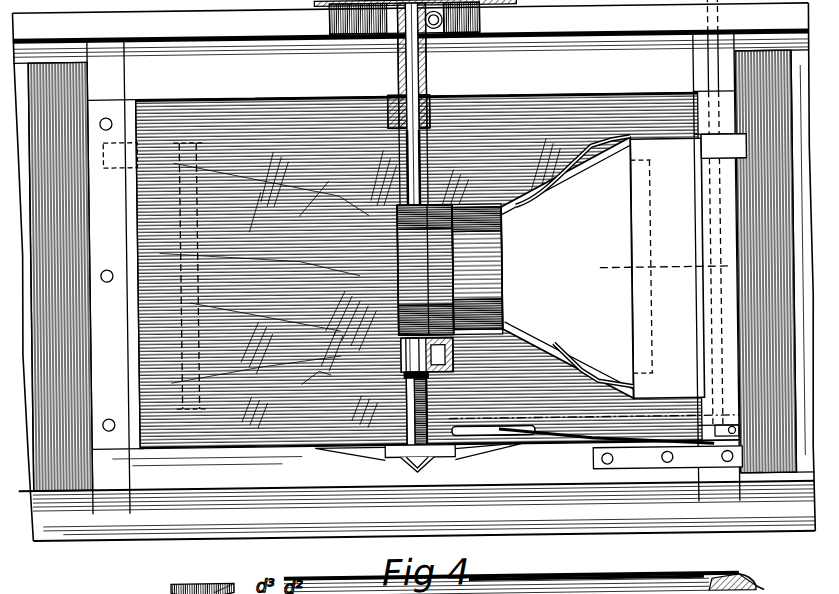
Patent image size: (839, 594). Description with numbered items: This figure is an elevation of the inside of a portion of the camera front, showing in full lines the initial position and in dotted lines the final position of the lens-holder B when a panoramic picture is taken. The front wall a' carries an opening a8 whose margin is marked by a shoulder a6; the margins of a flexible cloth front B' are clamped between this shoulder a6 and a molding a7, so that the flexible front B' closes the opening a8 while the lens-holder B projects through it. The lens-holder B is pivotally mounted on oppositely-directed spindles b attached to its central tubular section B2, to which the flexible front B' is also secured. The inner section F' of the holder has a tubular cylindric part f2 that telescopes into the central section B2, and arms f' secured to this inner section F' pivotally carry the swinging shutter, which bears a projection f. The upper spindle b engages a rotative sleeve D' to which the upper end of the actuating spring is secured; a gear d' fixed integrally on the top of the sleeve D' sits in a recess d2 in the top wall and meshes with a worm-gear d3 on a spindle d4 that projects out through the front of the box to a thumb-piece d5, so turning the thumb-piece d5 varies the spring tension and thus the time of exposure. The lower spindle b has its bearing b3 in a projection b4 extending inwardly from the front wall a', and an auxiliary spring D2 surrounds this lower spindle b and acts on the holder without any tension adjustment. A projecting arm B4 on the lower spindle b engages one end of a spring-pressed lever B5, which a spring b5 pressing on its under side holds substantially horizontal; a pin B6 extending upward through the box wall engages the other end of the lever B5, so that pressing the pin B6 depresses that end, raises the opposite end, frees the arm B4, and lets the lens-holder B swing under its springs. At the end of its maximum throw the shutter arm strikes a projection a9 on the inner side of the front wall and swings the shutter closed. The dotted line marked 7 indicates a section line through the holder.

The front wall a' is at (411, 61).
The opening a8 is at (553, 95).
The projection a9 is at (176, 276).
The molding a7 is at (740, 579).
The shoulder a6 is at (755, 588).
The fixed gear d' is at (352, 33).
The recess d2 is at (490, 36).
The worm-gear d3 is at (437, 30).
The spindle d4 is at (183, 585).
The thumb-piece d5 is at (224, 580).
The rotative sleeve D' is at (388, 104).
The spindles b is at (430, 62).
The lens-holder B is at (449, 238).
The central tubular section B2 is at (410, 258).
The flexible front B' is at (304, 384).
The projecting arm B4 is at (480, 426).
The spring-pressed lever B5 is at (580, 436).
The pin B6 is at (709, 52).
The auxiliary spring D2 is at (430, 394).
The projection f is at (421, 270).
The arms f' is at (574, 252).
The tubular cylindric part f2 is at (492, 263).
The inner section F' is at (566, 268).
The section line 7 is at (662, 267).
The bearing b3 is at (385, 464).
The projection b4 is at (463, 464).
The spring b5 is at (698, 452).